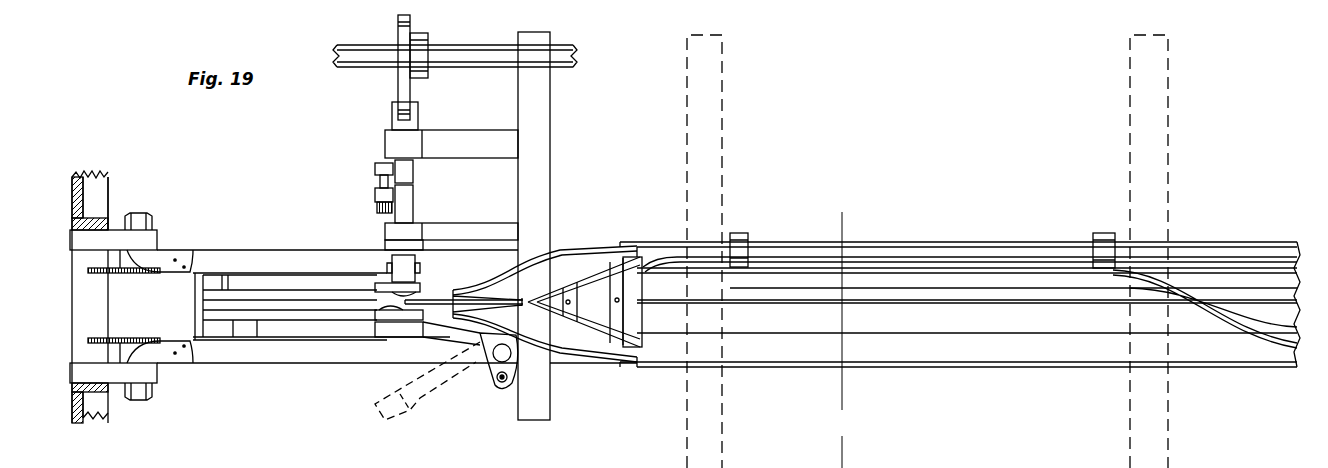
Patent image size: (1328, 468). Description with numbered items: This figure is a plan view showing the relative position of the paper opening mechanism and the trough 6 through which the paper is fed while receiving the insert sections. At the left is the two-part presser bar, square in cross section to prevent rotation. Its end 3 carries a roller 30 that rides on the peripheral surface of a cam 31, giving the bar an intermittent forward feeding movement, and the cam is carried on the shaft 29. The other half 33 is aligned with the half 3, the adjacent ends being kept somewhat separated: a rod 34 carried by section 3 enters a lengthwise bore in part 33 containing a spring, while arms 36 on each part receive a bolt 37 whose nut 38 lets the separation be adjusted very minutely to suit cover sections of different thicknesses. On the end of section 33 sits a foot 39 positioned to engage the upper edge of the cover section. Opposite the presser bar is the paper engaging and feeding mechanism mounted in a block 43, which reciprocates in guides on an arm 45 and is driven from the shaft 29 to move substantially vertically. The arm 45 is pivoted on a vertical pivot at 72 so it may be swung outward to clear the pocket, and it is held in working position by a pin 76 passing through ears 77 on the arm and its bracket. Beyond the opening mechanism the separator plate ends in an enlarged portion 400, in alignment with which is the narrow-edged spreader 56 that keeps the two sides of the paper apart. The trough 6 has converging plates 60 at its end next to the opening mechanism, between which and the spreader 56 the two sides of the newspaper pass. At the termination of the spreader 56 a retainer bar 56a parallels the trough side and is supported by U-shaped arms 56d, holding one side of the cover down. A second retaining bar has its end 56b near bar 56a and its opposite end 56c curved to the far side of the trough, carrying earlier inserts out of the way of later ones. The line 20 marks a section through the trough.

The end of presser bar 3 is at (418, 125).
The trough 6 is at (1062, 353).
The section line 20 is at (841, 330).
The shaft 29 is at (482, 52).
The roller 30 is at (422, 108).
The cam 31 is at (412, 26).
The presser bar half 33 is at (415, 198).
The rod 34 is at (415, 182).
The arms 36 is at (376, 165).
The bolt 37 is at (380, 180).
The nut 38 is at (378, 208).
The foot 39 is at (420, 277).
The block 43 is at (377, 317).
The arm 45 is at (400, 327).
The spreader 56 is at (612, 266).
The retainer bar 56a is at (888, 257).
The end of retaining bar 56b is at (955, 282).
The end of retaining bar 56c is at (1250, 340).
The arms 56d is at (742, 236).
The plates 60 is at (557, 252).
The vertical pivot 72 is at (508, 356).
The pin 76 is at (501, 384).
The ears 77 is at (498, 380).
The enlarged end of separator plate 400 is at (563, 353).